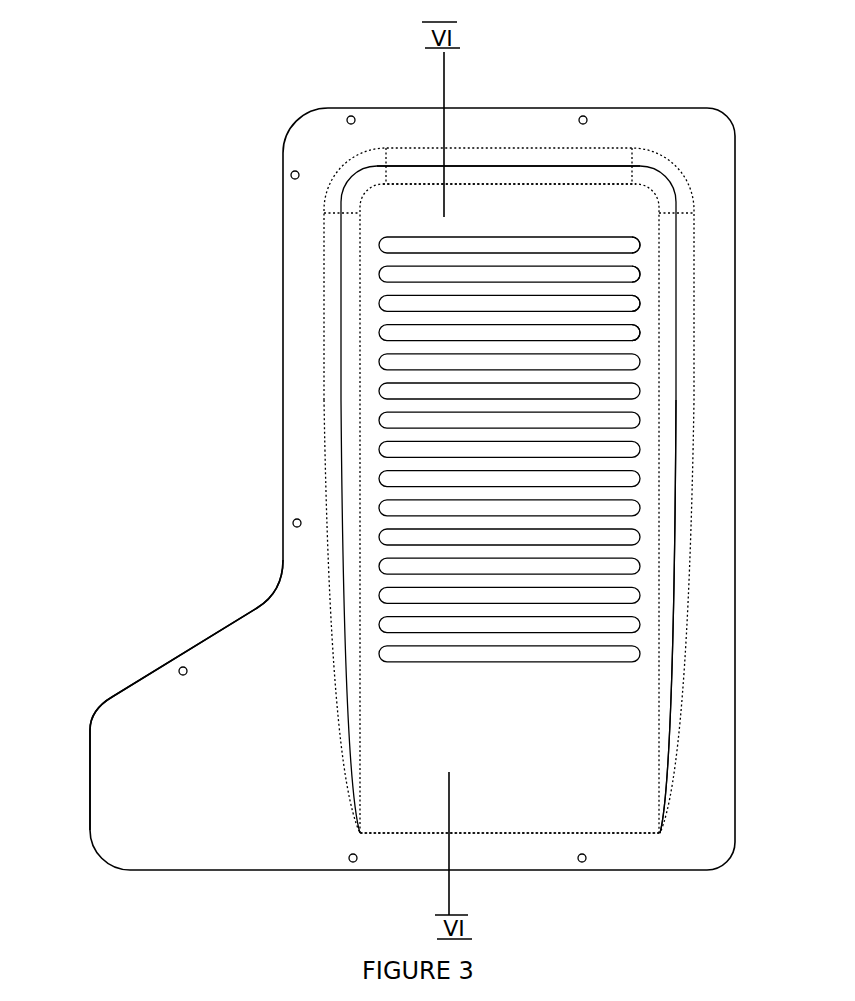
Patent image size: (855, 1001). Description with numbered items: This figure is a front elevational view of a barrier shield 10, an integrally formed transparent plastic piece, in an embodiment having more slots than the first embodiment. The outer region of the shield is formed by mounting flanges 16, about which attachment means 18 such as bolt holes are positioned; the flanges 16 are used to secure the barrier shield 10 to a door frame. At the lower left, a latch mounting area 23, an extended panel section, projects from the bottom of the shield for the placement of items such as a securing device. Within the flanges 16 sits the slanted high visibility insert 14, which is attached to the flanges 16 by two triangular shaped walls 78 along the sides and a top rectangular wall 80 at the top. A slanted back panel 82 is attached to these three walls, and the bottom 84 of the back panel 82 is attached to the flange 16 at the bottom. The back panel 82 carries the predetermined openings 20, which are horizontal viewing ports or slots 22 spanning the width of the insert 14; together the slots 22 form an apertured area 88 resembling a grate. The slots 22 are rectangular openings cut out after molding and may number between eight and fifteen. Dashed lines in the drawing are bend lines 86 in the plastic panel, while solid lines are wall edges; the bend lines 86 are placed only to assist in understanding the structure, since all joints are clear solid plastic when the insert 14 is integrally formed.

The barrier shield 10 is at (185, 518).
The slanted high visibility insert 14 is at (514, 513).
The mounting flanges 16 is at (652, 118).
The attachment means 18 is at (291, 176).
The predetermined openings 20 is at (437, 489).
The horizontal viewing ports or slots 22 is at (379, 276).
The latch mounting area 23 is at (122, 797).
The triangular shaped walls 78 is at (695, 410).
The top rectangular wall 80 is at (527, 165).
The slanted back panel 82 is at (550, 225).
The bottom of the back panel 84 is at (520, 824).
The bend lines 86 is at (663, 620).
The apertured area 88 is at (638, 318).